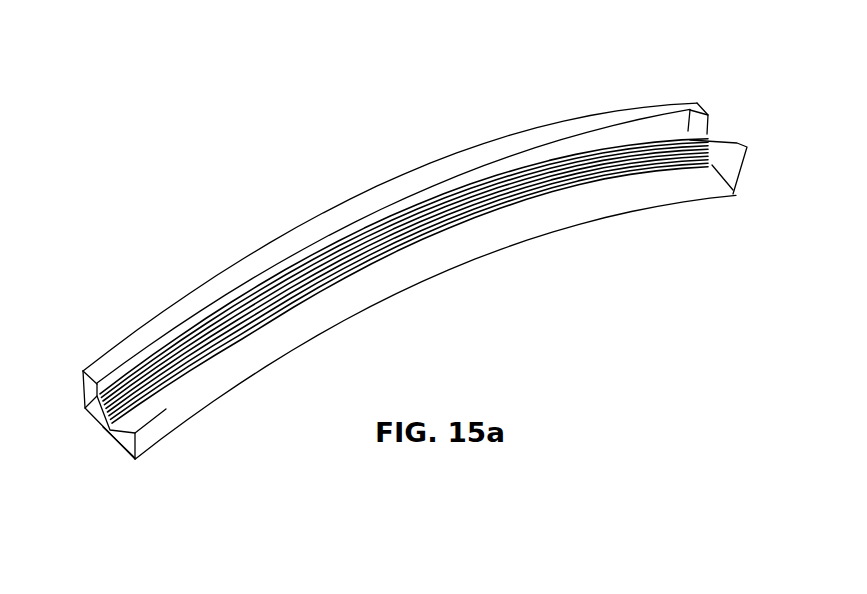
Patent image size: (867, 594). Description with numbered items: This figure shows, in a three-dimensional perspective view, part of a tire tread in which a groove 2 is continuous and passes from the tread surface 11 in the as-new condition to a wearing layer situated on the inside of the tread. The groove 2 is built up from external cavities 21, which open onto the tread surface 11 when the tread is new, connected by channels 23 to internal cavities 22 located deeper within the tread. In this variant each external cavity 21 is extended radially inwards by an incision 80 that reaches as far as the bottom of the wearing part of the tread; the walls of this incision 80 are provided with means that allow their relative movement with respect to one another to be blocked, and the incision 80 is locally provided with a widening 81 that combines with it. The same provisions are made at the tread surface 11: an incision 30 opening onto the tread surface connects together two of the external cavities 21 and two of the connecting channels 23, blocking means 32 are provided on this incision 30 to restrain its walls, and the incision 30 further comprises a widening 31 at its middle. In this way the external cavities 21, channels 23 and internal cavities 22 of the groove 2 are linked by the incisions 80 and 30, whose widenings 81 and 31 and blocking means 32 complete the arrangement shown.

The tread surface 11 is at (486, 138).
The groove 2 is at (707, 130).
The external cavity 21 is at (157, 363).
The internal cavity 22 is at (362, 272).
The connecting channel 23 is at (267, 287).
The incision opening onto the tread surface 30 is at (367, 223).
The widening 31 is at (410, 207).
The blocking means 32 is at (477, 183).
The incision 80 is at (132, 388).
The widening 81 is at (128, 418).